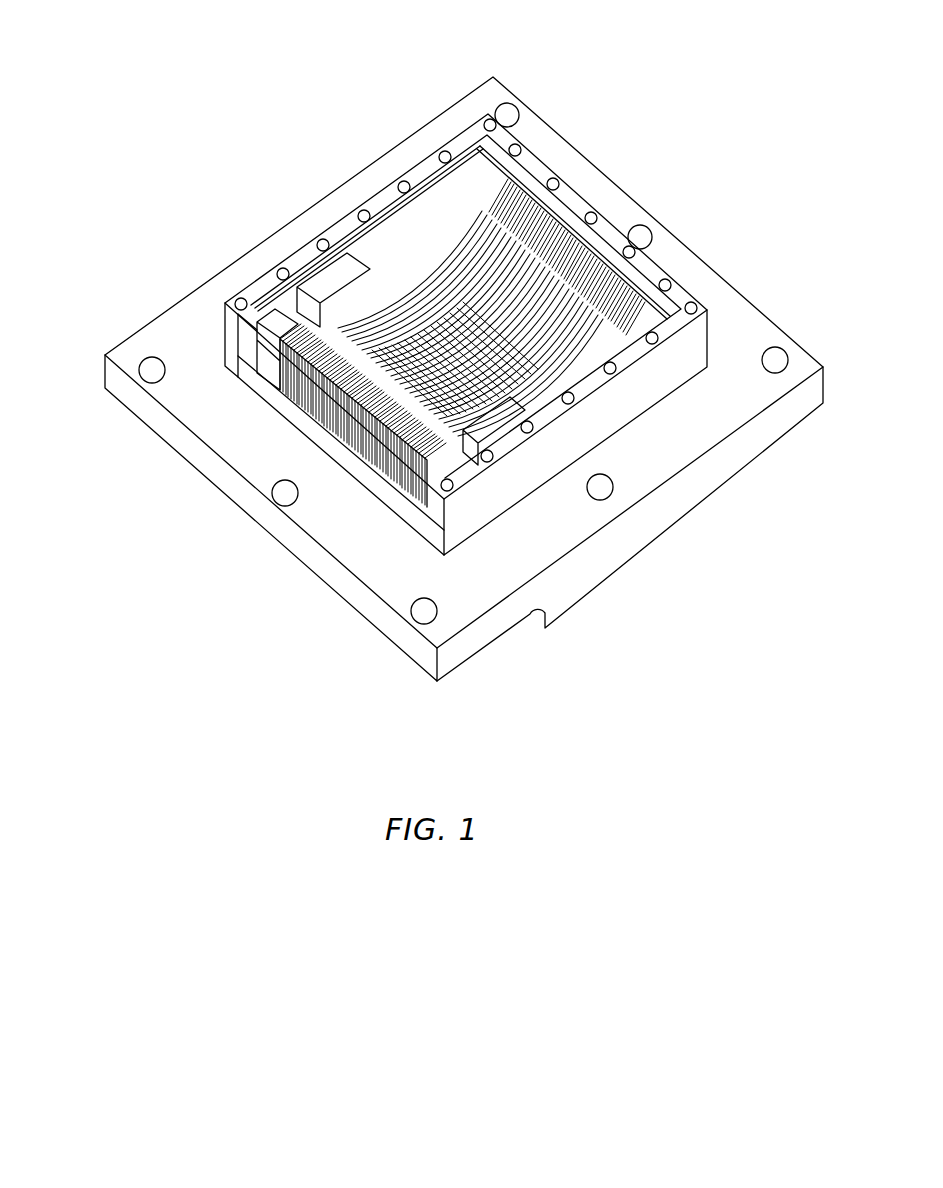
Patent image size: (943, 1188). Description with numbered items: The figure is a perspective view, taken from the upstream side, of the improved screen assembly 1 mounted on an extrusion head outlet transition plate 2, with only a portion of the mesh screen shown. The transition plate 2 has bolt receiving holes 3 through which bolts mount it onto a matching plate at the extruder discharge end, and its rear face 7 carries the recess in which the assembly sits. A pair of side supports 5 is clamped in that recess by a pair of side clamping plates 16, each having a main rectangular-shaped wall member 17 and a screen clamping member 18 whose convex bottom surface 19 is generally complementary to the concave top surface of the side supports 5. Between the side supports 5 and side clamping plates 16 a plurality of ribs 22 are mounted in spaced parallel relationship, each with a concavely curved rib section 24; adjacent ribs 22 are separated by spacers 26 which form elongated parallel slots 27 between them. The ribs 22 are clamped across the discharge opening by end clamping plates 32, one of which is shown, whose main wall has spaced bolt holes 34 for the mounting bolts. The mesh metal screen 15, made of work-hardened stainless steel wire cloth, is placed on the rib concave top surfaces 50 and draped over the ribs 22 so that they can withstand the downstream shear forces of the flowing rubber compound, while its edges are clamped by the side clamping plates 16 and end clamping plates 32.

The screen assembly 1 is at (574, 186).
The transition plate 2 is at (193, 472).
The bolt receiving holes 3 is at (152, 372).
The side supports 5 is at (268, 356).
The rear face 7 is at (723, 422).
The mesh metal screen 15 is at (515, 218).
The side clamping plates 16 is at (428, 208).
The main rectangular-shaped wall member 17 is at (606, 440).
The screen clamping member 18 is at (363, 247).
The convex bottom surface 19 is at (365, 338).
The ribs 22 is at (465, 236).
The concavely curved rib section 24 is at (451, 316).
The spacers 26 is at (549, 294).
The elongated parallel slots 27 is at (513, 390).
The end clamping plates 32 is at (698, 303).
The bolt holes 34 is at (553, 179).
The rib concave top surfaces 50 is at (360, 330).